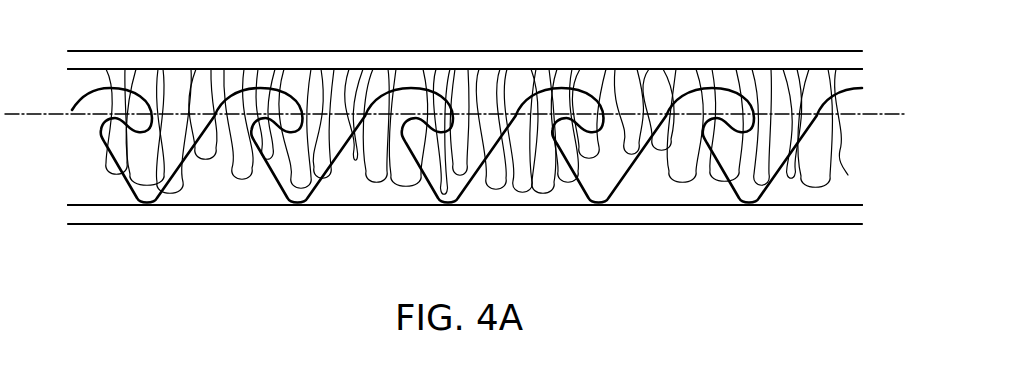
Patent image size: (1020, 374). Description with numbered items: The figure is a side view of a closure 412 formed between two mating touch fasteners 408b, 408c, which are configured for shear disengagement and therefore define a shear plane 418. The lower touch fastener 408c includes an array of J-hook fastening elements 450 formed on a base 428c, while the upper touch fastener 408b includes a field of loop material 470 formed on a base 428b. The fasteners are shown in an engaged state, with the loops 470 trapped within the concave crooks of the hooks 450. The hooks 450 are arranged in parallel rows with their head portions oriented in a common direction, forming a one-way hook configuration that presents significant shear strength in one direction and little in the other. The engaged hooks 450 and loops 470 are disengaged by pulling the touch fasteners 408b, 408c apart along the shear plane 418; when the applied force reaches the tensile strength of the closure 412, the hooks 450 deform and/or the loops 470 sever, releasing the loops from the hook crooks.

The closure 412 is at (162, 38).
The J-hook fastening elements 450 is at (268, 70).
The loop material 470 is at (475, 80).
The base 428b is at (598, 62).
The base 428c is at (224, 217).
The touch fastener 408b is at (755, 44).
The touch fastener 408c is at (652, 239).
The shear plane 418 is at (882, 113).